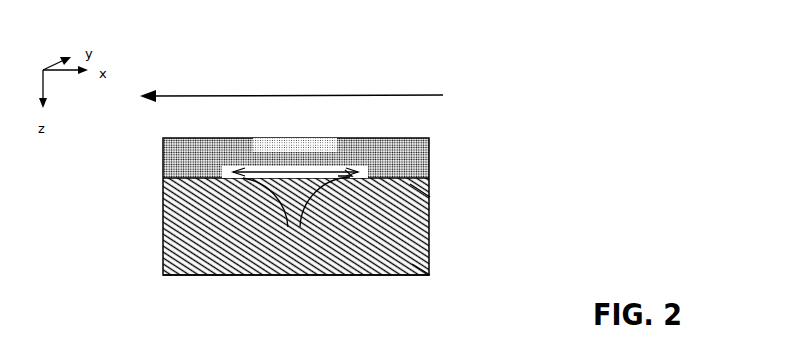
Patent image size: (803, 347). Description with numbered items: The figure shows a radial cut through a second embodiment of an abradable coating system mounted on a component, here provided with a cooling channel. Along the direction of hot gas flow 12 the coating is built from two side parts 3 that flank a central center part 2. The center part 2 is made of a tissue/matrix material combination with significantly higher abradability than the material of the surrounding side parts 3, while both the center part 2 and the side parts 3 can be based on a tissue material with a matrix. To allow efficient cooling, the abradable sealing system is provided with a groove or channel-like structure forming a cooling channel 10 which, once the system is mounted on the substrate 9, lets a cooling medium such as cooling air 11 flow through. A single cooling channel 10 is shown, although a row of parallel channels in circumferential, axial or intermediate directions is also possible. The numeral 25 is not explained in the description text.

The center part 2 is at (309, 137).
The side part 3 is at (197, 137).
The substrate 9 is at (430, 275).
The cooling channel 10 is at (372, 187).
The cooling air 11 is at (284, 209).
The direction of hot gas flow 12 is at (296, 95).
The interface region 25 is at (430, 197).